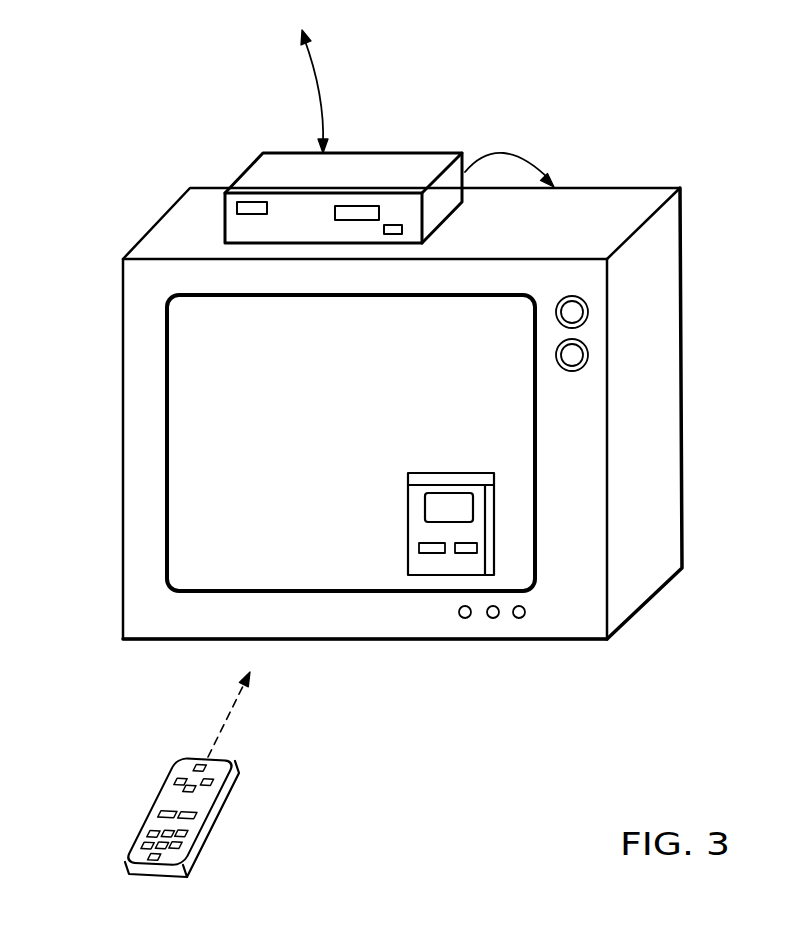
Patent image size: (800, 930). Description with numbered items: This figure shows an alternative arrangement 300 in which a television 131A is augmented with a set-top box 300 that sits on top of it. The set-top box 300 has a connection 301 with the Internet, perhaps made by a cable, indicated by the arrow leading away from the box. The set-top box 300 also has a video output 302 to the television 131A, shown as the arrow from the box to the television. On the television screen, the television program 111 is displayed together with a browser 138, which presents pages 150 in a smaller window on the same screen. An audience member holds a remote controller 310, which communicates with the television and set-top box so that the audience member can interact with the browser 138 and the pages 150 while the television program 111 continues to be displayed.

The set-top box 300 is at (247, 168).
The connection 301 is at (318, 78).
The video output 302 is at (520, 155).
The television program 111 is at (203, 471).
The television 131A is at (645, 474).
The browser 138 is at (494, 527).
The pages 150 is at (455, 515).
The remote controller 310 is at (218, 830).